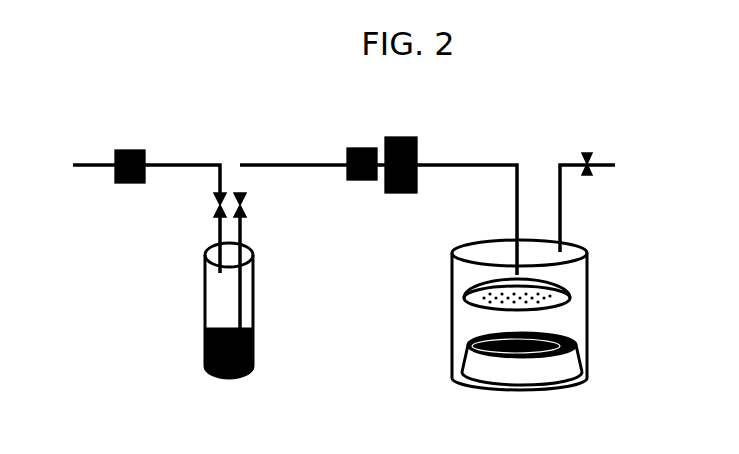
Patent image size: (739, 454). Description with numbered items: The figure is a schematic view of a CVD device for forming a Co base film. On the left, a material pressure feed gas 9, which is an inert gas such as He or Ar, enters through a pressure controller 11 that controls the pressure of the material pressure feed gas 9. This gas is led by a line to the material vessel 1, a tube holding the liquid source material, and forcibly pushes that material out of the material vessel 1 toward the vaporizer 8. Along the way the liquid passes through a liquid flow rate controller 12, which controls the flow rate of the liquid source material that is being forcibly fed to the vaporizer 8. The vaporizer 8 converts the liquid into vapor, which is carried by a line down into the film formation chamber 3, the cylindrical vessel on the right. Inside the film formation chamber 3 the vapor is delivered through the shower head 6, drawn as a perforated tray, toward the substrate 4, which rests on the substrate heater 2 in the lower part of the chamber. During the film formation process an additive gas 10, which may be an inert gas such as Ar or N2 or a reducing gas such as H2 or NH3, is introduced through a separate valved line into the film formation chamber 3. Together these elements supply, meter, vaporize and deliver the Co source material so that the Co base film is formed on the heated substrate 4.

The material vessel 1 is at (205, 290).
The substrate heater 2 is at (472, 368).
The film formation chamber 3 is at (590, 327).
The substrate 4 is at (470, 343).
The shower head 6 is at (468, 286).
The vaporizer 8 is at (401, 181).
The material pressure feed gas 9 is at (334, 214).
The additive gas 10 is at (614, 165).
The pressure controller 11 is at (115, 178).
The liquid flow rate controller 12 is at (360, 182).